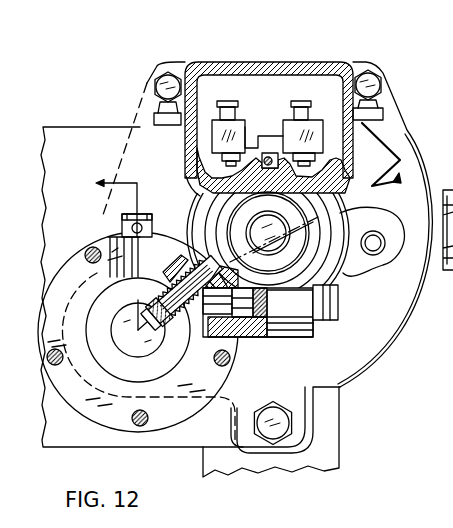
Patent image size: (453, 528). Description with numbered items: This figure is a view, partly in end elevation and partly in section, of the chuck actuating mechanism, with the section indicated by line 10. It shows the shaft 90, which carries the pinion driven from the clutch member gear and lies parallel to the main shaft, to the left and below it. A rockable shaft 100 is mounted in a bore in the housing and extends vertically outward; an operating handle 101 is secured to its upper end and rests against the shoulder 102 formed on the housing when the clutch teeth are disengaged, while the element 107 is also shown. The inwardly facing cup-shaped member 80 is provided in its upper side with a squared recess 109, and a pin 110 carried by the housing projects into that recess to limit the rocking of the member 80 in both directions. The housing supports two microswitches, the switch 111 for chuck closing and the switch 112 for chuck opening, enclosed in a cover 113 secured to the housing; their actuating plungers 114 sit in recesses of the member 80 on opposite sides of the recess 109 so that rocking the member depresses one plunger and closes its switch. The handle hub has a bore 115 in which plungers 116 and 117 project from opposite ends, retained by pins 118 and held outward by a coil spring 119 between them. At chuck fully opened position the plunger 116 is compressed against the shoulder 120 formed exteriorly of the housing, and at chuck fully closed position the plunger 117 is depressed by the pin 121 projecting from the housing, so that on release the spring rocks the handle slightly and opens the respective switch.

The section line 10- 10 is at (243, 149).
The cup-shaped member 80 is at (245, 269).
The shaft 90 is at (155, 330).
The rockable shaft 100 is at (148, 213).
The operating handle 101 is at (112, 224).
The shoulder 102 is at (163, 233).
The splined drive shaft 107 is at (180, 322).
The squared recess 109 is at (268, 156).
The pin 110 is at (273, 132).
The switch 111 is at (300, 127).
The switch 112 is at (213, 122).
The cover 113 is at (201, 64).
The actuating plungers 114 is at (327, 152).
The bore 115 is at (252, 332).
The plunger 116 is at (190, 314).
The plunger 117 is at (347, 300).
The pins 118 is at (245, 345).
The coil spring 119 is at (260, 327).
The shoulder 120 is at (158, 279).
The pin 121 is at (384, 214).